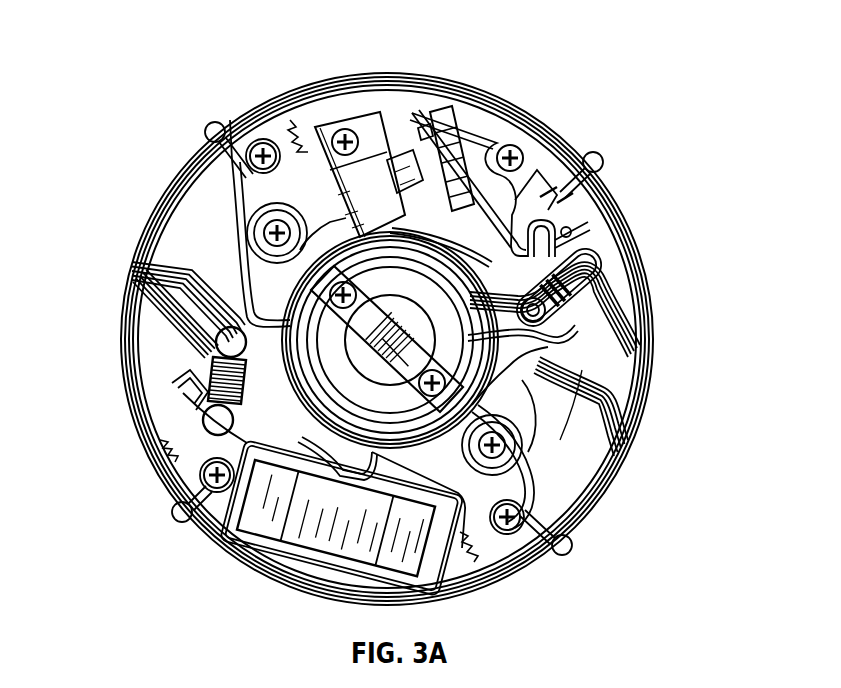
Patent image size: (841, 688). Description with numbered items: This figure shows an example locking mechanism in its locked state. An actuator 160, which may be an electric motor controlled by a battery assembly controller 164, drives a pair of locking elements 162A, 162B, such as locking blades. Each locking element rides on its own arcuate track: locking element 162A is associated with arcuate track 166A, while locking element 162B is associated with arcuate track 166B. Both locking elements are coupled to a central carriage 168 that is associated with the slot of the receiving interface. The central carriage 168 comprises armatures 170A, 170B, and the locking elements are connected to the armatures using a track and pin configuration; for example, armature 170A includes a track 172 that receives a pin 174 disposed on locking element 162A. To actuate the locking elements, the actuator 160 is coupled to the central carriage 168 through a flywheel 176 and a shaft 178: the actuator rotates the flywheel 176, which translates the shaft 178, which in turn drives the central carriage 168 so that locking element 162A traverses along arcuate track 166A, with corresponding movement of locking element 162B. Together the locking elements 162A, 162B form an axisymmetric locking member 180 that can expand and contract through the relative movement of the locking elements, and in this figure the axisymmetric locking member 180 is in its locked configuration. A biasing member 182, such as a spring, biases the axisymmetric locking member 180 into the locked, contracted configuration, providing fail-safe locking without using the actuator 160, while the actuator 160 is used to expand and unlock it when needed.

The actuator 160 is at (355, 185).
The locking element 162A is at (523, 383).
The locking element 162B is at (253, 293).
The battery assembly controller 164 is at (305, 527).
The arcuate track 166A is at (613, 337).
The arcuate track 166B is at (150, 337).
The central carriage 168 is at (307, 257).
The armature 170A is at (602, 265).
The armature 170B is at (185, 397).
The track 172 is at (578, 268).
The pin 174 is at (585, 252).
The flywheel 176 is at (440, 120).
The shaft 178 is at (458, 135).
The axisymmetric locking member 180 is at (558, 446).
The biasing member 182 is at (205, 410).